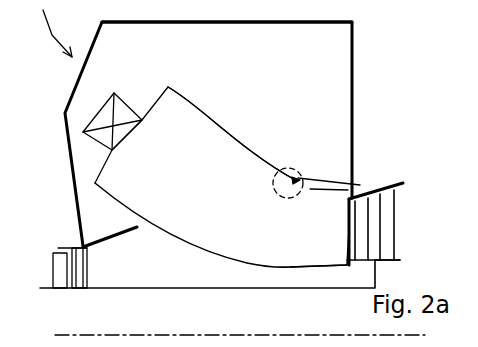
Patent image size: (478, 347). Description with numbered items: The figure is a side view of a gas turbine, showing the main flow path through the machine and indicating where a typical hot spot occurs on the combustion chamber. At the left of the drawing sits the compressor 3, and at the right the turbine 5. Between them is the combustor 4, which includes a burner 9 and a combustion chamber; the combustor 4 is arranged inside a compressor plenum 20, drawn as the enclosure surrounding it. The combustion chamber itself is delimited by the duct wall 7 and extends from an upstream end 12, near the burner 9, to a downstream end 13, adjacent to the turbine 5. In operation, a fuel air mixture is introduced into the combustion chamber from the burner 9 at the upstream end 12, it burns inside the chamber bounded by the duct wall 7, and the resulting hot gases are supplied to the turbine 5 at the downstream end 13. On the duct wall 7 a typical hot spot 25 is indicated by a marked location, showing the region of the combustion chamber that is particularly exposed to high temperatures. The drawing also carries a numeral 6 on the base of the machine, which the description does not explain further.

The compressor 3 is at (60, 248).
The combustor 4 is at (190, 197).
The turbine 5 is at (379, 190).
The floor 6 is at (220, 296).
The duct wall 7 is at (232, 135).
The burner 9 is at (123, 108).
The upstream end 12 is at (151, 108).
The downstream end 13 is at (343, 247).
The compressor plenum 20 is at (306, 73).
The hot spot 25 is at (397, 192).